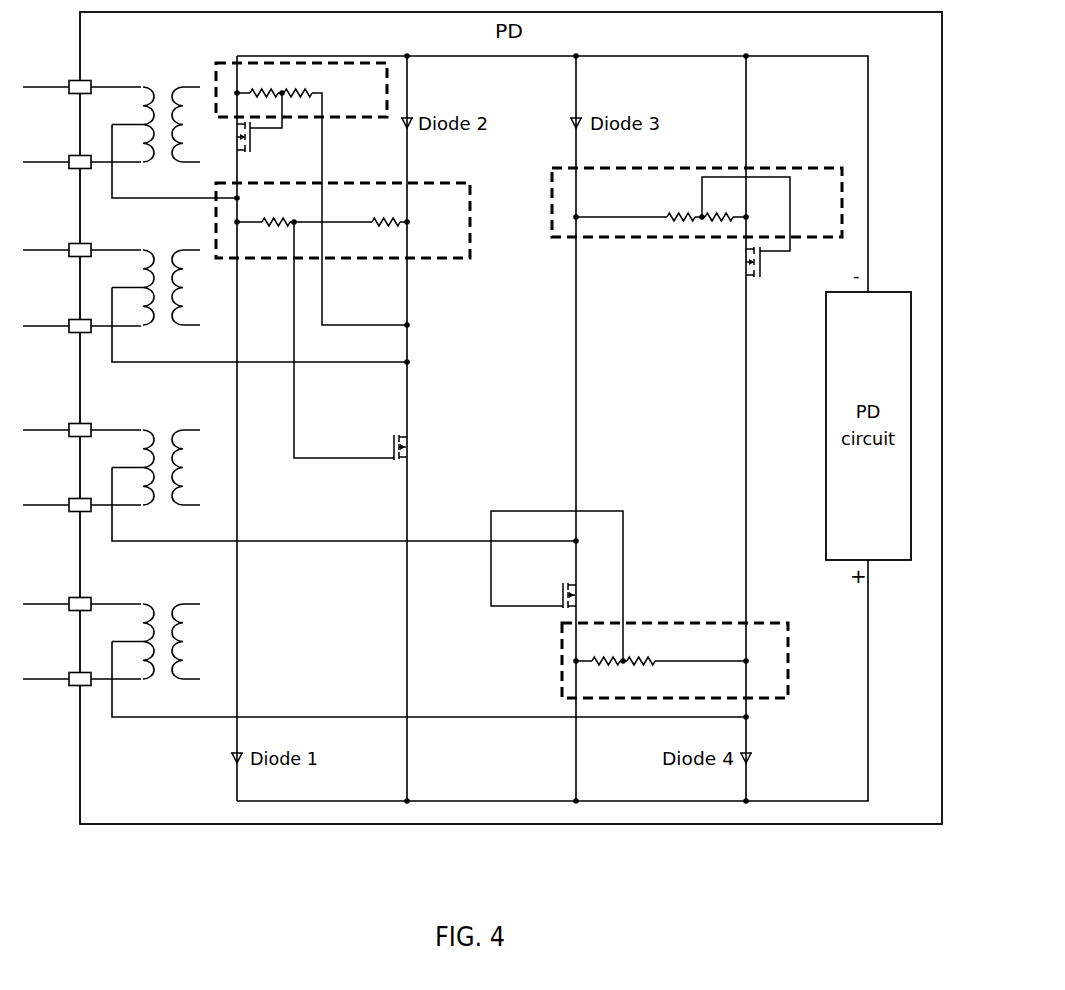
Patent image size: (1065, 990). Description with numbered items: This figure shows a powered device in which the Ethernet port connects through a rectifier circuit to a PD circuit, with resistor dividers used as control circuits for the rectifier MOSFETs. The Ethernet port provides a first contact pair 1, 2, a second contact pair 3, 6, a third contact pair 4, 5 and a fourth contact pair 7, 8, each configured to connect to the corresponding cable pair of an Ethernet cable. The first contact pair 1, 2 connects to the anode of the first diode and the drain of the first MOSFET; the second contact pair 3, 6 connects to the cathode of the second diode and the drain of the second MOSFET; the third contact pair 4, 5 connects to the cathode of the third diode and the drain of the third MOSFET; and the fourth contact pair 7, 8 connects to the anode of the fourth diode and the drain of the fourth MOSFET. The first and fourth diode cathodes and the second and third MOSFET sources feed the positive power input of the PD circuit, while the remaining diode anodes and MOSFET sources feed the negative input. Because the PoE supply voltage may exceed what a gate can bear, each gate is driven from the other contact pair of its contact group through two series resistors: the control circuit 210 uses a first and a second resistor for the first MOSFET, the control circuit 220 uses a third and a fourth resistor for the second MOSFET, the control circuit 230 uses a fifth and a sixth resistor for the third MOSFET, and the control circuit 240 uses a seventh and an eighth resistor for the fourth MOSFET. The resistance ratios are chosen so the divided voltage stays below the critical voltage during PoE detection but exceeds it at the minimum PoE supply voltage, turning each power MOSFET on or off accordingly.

The contact 1 of first contact pair 1 is at (82, 77).
The contact 2 of first contact pair 2 is at (82, 152).
The contact 3 of second contact pair 3 is at (82, 240).
The contact 4 of third contact pair 4 is at (82, 420).
The contact 5 of third contact pair 5 is at (82, 495).
The contact 6 of second contact pair 6 is at (82, 316).
The contact 7 of fourth contact pair 7 is at (82, 594).
The contact 8 of fourth contact pair 8 is at (82, 669).
The control circuit 210 is at (311, 194).
The control circuit 220 is at (343, 321).
The control circuit 230 is at (620, 604).
The control circuit 240 is at (697, 224).